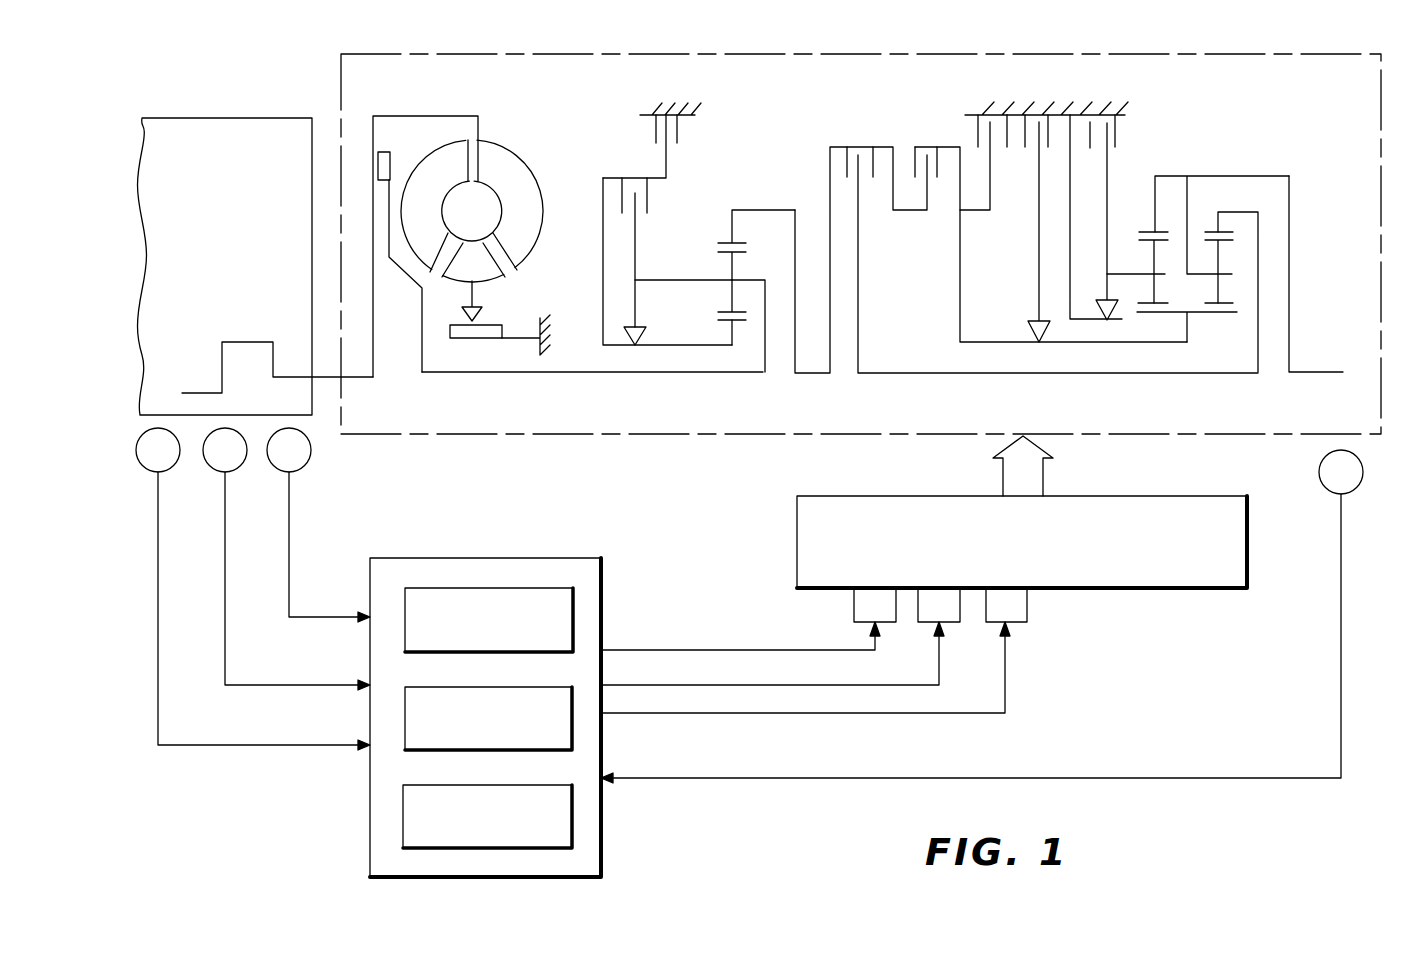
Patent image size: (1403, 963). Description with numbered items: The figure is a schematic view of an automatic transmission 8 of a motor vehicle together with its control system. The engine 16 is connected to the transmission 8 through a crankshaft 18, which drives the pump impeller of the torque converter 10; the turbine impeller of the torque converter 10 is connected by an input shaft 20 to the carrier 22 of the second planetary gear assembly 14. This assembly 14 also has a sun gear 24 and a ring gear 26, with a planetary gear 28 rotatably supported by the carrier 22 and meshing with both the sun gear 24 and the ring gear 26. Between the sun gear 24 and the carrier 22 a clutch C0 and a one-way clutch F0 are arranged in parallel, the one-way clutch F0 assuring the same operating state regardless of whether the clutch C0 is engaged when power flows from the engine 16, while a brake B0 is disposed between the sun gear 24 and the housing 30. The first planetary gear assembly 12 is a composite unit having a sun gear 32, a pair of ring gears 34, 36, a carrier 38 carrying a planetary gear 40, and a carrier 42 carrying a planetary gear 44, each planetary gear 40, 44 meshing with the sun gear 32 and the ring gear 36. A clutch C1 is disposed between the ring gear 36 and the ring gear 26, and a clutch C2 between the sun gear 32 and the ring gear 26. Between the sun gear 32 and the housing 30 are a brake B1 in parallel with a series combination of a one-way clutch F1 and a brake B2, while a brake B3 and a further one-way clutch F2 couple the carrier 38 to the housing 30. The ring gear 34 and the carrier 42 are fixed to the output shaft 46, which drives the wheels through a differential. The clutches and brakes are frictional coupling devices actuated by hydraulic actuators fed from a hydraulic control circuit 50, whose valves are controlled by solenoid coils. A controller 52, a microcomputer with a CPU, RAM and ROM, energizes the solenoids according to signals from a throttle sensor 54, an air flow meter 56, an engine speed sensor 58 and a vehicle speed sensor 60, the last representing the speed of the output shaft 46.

The automatic transmission 8 is at (398, 50).
The torque converter 10 is at (512, 95).
The first planetary gear assembly 12 is at (1320, 82).
The second planetary gear assembly 14 is at (745, 90).
The engine 16 is at (218, 118).
The crankshaft 18 is at (320, 377).
The input shaft 20 is at (497, 372).
The carrier 22 is at (662, 280).
The sun gear 24 is at (735, 322).
The ring gear 26 is at (730, 240).
The planetary gear 28 is at (727, 312).
The housing 30 is at (657, 105).
The sun gear 32 is at (1197, 315).
The ring gear 34 is at (1145, 232).
The ring gear 36 is at (1222, 232).
The carrier 38 is at (1118, 272).
The planetary gear 40 is at (1142, 313).
The carrier 42 is at (1200, 272).
The planetary gear 44 is at (1225, 303).
The output shaft 46 is at (1315, 368).
The hydraulic control circuit 50 is at (1177, 590).
The controller 52 is at (368, 780).
The throttle sensor 54 is at (160, 472).
The air flow meter 56 is at (228, 472).
The engine speed sensor 58 is at (293, 472).
The vehicle speed sensor 60 is at (1319, 468).
The brake B0 is at (656, 137).
The clutch C0 is at (647, 192).
The one-way clutch F0 is at (630, 335).
The clutch C1 is at (847, 165).
The clutch C2 is at (915, 160).
The brake B1 is at (978, 130).
The brake B2 is at (1023, 137).
The brake B3 is at (1115, 128).
The one-way clutch F1 is at (1030, 322).
The one-way clutch F2 is at (1100, 300).